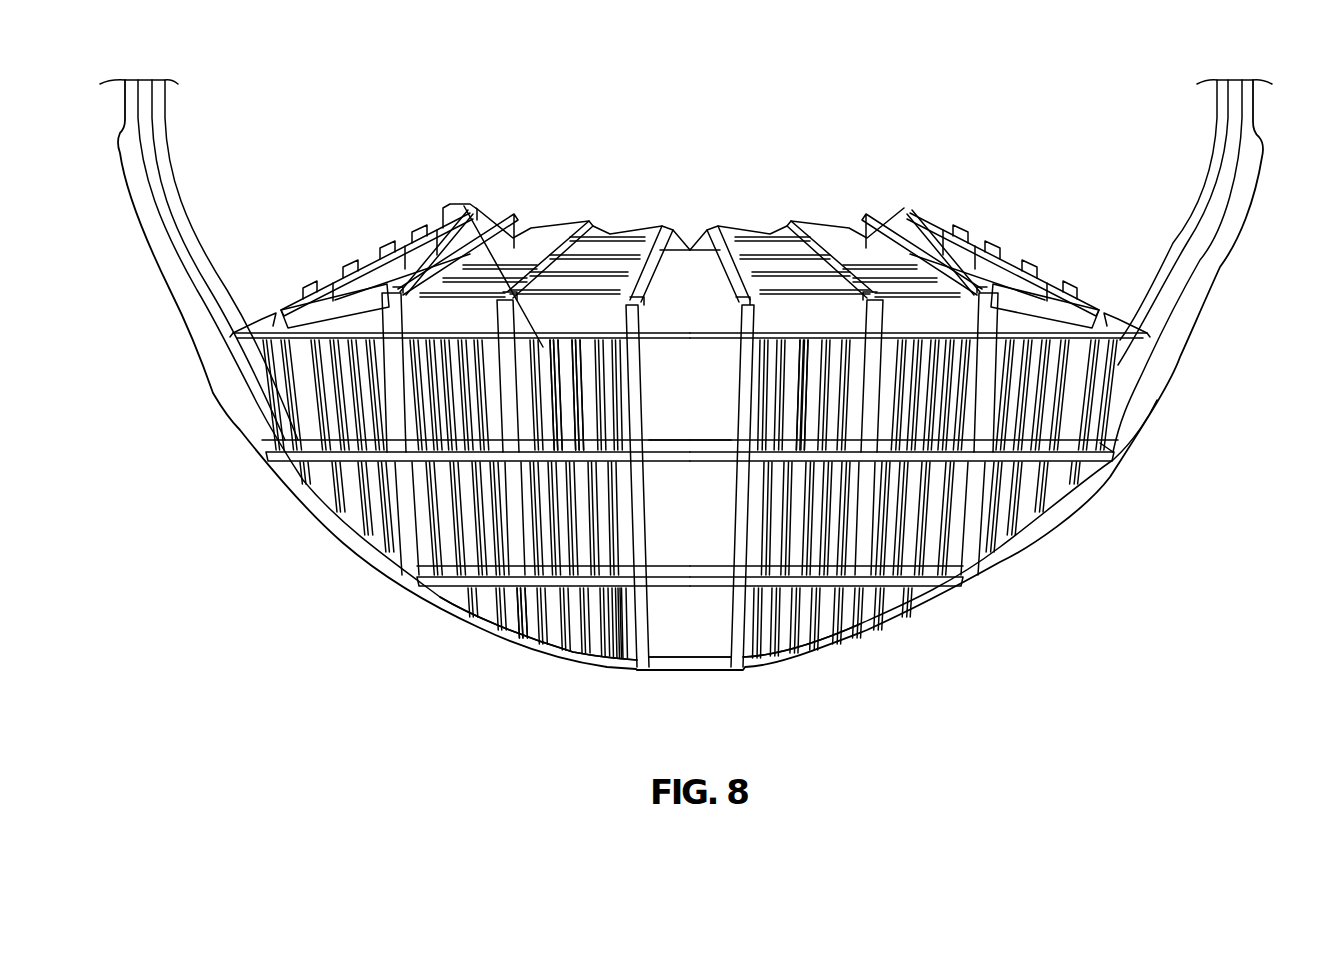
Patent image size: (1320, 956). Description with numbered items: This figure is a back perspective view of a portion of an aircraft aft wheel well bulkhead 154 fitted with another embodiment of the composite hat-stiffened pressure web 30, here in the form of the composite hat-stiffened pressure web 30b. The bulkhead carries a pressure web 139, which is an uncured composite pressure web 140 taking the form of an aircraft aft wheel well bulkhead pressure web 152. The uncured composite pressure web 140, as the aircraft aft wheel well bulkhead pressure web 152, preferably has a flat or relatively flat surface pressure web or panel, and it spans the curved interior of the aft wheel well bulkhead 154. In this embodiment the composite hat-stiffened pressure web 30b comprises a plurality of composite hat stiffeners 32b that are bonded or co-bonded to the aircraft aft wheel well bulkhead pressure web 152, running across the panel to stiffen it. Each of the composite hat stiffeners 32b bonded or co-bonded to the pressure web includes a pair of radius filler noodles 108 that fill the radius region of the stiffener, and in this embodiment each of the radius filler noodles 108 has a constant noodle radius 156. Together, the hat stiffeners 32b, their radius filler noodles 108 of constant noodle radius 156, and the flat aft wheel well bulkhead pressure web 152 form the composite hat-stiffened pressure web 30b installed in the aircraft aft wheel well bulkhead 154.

The composite hat-stiffened pressure web 30 is at (850, 675).
The composite hat-stiffened pressure web 30b is at (752, 660).
The composite hat stiffeners 32b is at (613, 633).
The pair of radius filler noodles 108 is at (462, 203).
The pressure web 139 is at (678, 677).
The uncured composite pressure web 140 is at (708, 637).
The aircraft aft wheel well bulkhead pressure web 152 is at (545, 350).
The aircraft aft wheel well bulkhead 154 is at (352, 621).
The constant noodle radius 156 is at (573, 350).